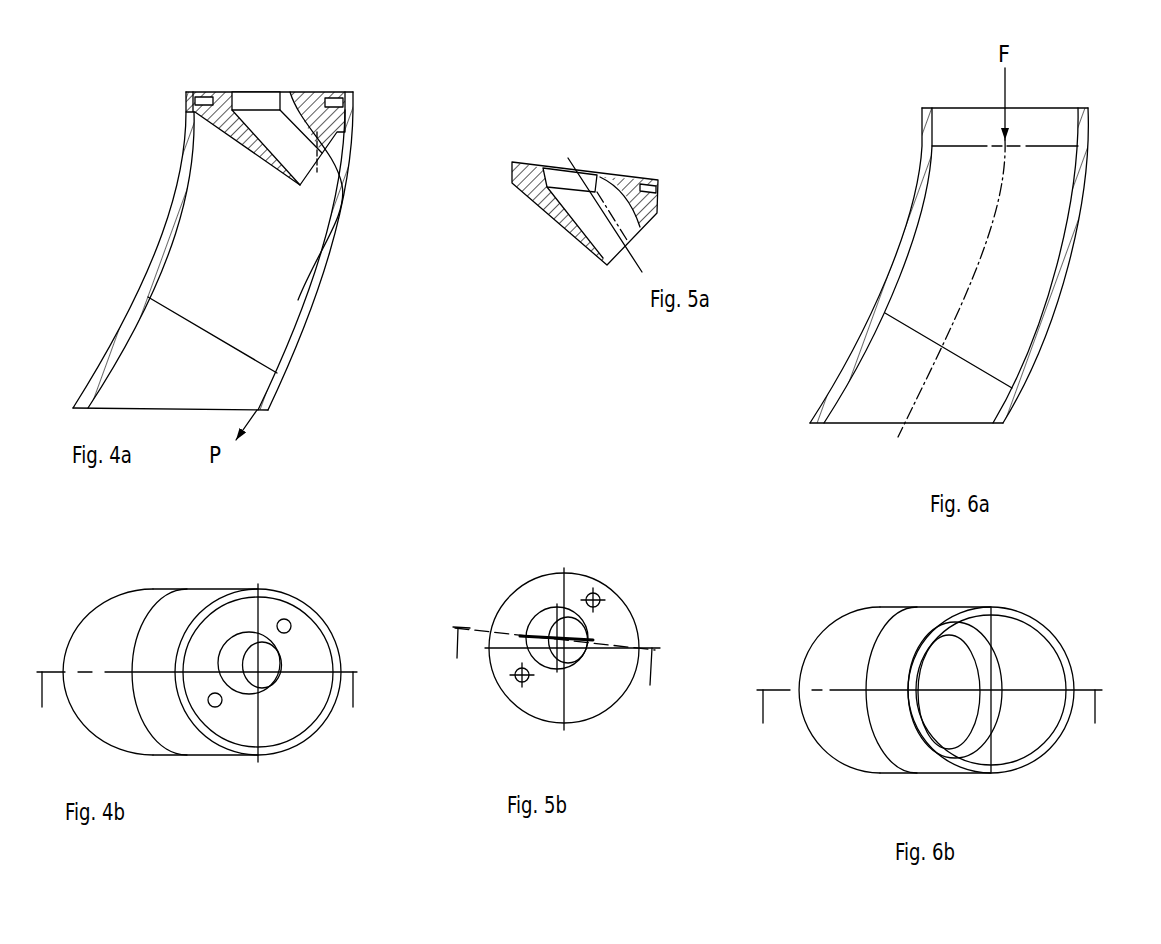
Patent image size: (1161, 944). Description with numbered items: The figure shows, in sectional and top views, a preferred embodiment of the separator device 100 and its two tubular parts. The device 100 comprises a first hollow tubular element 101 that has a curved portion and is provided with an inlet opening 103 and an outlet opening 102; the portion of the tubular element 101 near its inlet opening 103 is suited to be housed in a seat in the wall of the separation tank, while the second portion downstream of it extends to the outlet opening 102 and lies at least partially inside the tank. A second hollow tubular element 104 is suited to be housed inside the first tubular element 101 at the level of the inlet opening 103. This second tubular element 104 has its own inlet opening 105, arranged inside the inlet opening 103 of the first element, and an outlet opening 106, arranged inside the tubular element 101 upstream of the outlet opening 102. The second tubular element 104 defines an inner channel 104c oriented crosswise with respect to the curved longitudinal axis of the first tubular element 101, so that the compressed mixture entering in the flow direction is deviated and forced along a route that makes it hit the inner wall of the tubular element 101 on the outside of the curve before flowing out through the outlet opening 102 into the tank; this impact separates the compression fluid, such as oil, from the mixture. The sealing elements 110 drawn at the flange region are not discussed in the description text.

In FIG. 4A, the separator device 100 is at (283, 239).
In FIG. 4B, the separator device 100 is at (272, 540).
In FIG. 4A, the first hollow tubular element 101 is at (170, 222).
In FIG. 6A, the first hollow tubular element 101 is at (862, 213).
In FIG. 6B, the first hollow tubular element 101 is at (949, 640).
In FIG. 6A, the outlet opening 102 is at (860, 430).
In FIG. 6B, the outlet opening 102 is at (945, 718).
In FIG. 6A, the inlet opening 103 is at (1042, 107).
In FIG. 6B, the inlet opening 103 is at (1038, 732).
In FIG. 4A, the second hollow tubular element 104 is at (358, 105).
In FIG. 5A, the second hollow tubular element 104 is at (530, 238).
In FIG. 5B, the second hollow tubular element 104 is at (597, 535).
In FIG. 4A, the inner channel 104c is at (303, 162).
In FIG. 5A, the inner channel 104c is at (598, 223).
In FIG. 5A, the inlet opening 105 is at (588, 162).
In FIG. 5B, the inlet opening 105 is at (527, 635).
In FIG. 5A, the outlet opening 106 is at (643, 245).
In FIG. 5B, the outlet opening 106 is at (573, 628).
In FIG. 4A, the sealing ring 110 is at (190, 99).